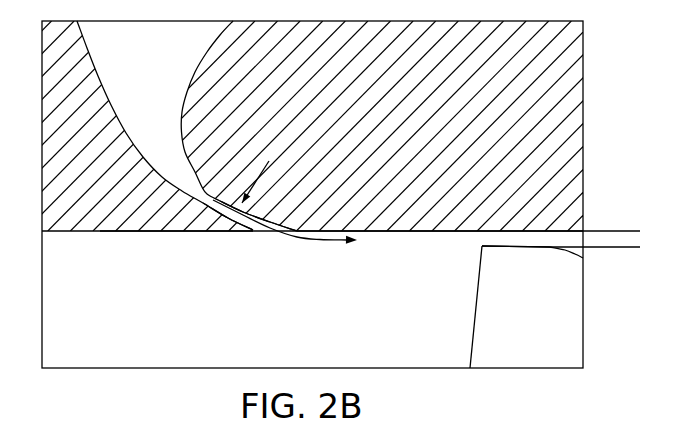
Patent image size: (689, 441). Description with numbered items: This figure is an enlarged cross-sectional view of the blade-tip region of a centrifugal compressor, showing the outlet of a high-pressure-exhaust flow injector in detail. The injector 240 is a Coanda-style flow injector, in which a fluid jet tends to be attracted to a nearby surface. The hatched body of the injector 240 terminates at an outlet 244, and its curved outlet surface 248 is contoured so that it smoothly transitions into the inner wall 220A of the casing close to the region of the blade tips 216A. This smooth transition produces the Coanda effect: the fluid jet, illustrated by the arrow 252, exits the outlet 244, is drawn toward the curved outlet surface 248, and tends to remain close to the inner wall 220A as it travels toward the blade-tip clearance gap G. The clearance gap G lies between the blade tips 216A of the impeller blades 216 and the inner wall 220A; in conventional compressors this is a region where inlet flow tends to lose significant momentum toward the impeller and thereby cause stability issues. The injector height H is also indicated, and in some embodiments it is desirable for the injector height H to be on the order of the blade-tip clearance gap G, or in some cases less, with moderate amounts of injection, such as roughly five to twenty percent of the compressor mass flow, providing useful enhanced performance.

The injector 240 is at (152, 65).
The outlet surface 248 is at (167, 231).
The outlet 244 is at (252, 240).
The arrow 252 is at (317, 241).
The injector height H is at (226, 226).
The inner wall 220A is at (393, 232).
The impeller blades 216 is at (512, 320).
The blade tips 216A is at (480, 238).
The blade-tip clearance gap G is at (627, 271).